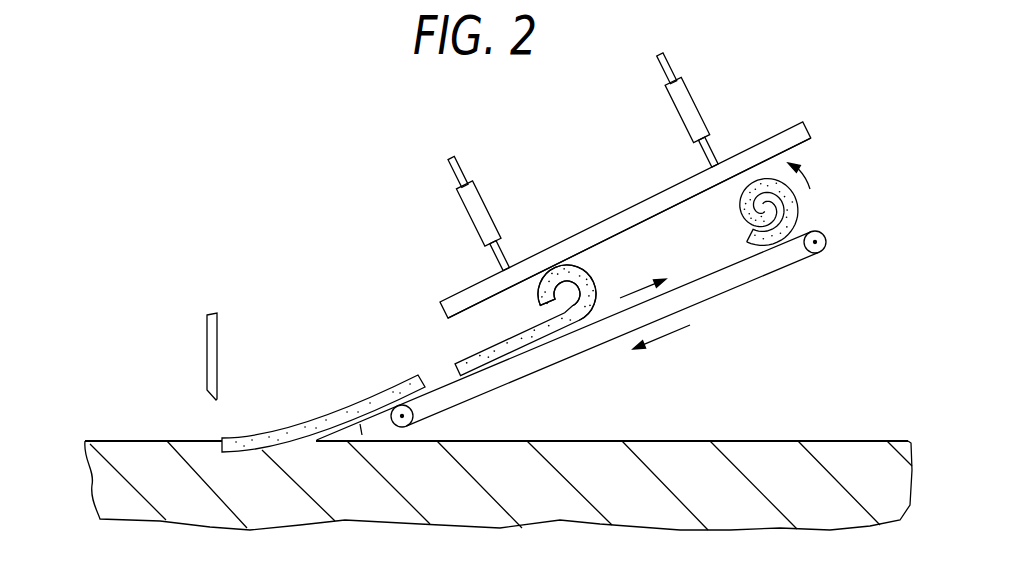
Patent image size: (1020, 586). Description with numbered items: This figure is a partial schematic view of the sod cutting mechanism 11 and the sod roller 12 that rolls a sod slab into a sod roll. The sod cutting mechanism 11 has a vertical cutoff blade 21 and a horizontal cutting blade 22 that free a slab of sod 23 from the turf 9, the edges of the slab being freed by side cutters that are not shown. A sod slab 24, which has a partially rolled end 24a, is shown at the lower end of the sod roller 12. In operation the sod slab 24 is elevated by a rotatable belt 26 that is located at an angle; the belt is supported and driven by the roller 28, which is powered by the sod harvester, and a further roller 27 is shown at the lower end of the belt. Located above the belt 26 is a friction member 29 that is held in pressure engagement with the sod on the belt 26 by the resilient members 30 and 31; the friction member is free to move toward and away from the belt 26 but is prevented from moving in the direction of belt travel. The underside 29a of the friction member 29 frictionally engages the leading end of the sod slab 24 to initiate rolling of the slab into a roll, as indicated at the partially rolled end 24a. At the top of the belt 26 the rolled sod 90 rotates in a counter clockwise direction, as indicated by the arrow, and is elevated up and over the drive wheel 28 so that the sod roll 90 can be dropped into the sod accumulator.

The turf 9 is at (142, 441).
The sod cutting mechanism 11 is at (248, 258).
The sod roller 12 is at (556, 155).
The vertical cutoff blade 21 is at (217, 342).
The horizontal cutting blade 22 is at (350, 432).
The slab of sod 23 is at (343, 411).
The sod slab 24 is at (497, 344).
The partially rolled end 24a is at (592, 274).
The rotatable belt 26 is at (725, 292).
The roller 27 is at (419, 428).
The roller 28 is at (823, 251).
The friction member 29 is at (608, 227).
The underside 29a is at (636, 226).
The resilient member 30 is at (477, 212).
The resilient member 31 is at (702, 105).
The rolled sod 90 is at (795, 210).